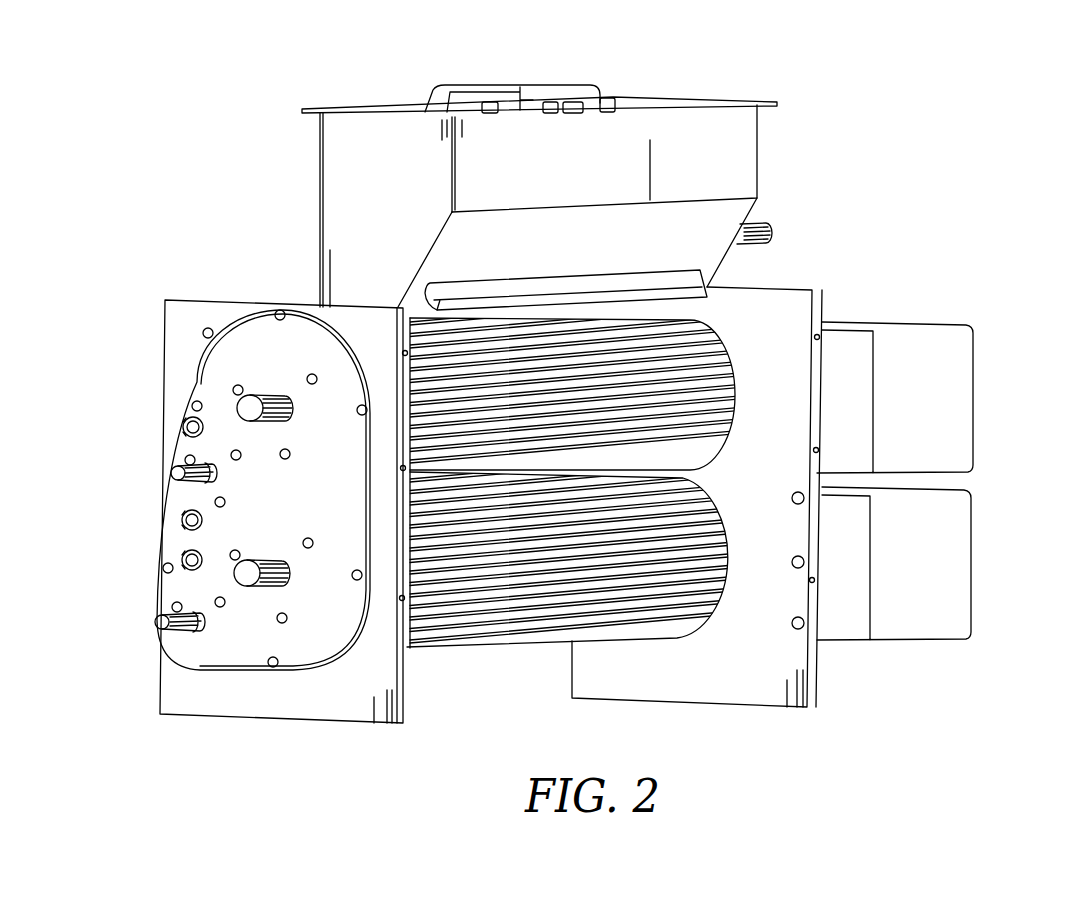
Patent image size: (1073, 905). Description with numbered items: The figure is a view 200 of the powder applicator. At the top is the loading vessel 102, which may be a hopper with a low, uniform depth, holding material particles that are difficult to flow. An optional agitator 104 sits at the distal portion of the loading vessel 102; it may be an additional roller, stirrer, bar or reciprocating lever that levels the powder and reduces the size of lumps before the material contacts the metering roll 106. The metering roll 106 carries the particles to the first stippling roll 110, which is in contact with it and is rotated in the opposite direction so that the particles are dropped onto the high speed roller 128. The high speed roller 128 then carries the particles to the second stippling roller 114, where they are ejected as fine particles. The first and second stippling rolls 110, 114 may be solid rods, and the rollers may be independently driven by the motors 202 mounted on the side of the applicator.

The view 200 is at (574, 379).
The loading vessel 102 is at (743, 167).
The agitator 104 is at (566, 85).
The metering roll 106 is at (683, 363).
The high speed roller 128 is at (678, 605).
The first stippling roll 110 is at (163, 486).
The second stippling roller 114 is at (157, 620).
The motors 202 is at (957, 397).